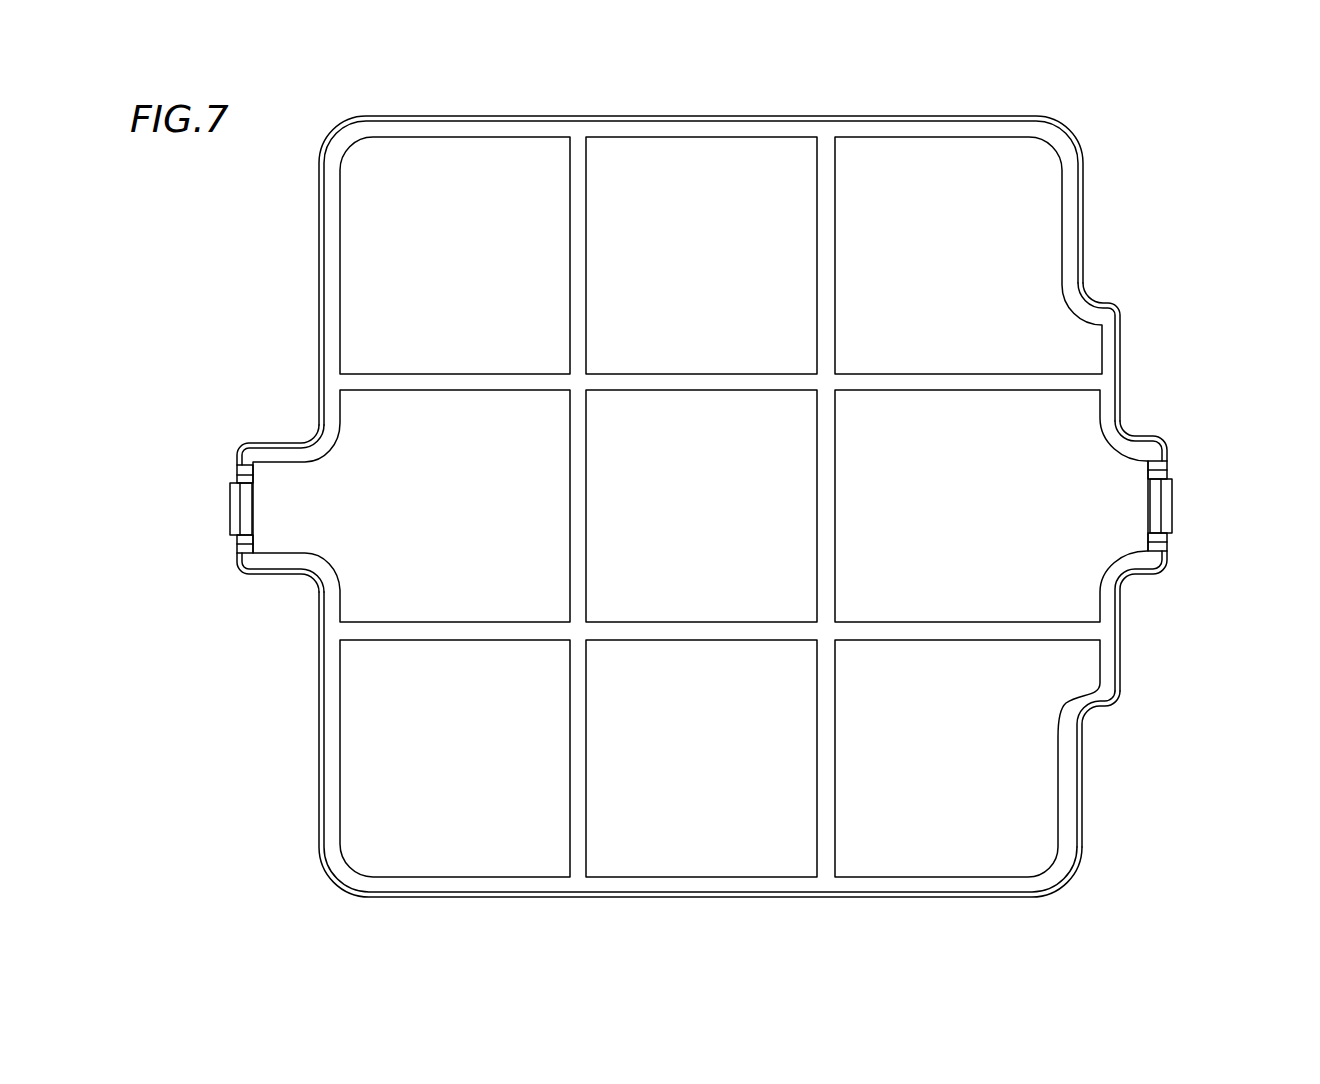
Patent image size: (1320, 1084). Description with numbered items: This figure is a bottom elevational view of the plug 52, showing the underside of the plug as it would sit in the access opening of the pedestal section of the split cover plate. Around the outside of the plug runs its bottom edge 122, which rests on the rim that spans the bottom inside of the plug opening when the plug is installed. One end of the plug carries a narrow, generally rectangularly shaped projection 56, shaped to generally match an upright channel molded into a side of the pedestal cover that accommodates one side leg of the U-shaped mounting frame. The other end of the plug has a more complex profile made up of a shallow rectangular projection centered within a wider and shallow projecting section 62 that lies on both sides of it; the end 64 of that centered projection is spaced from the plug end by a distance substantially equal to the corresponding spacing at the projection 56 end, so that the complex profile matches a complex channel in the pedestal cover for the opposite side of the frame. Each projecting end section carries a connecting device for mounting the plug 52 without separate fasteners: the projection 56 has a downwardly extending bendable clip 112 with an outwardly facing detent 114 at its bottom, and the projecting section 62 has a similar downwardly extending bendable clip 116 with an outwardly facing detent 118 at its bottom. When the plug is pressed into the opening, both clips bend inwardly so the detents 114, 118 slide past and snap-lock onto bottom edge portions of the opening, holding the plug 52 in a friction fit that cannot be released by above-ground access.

The plug 52 is at (730, 165).
The bottom edge 122 is at (948, 128).
The end of the projection 64 is at (1110, 346).
The projecting section 62 is at (1172, 556).
The projection 56 is at (267, 456).
The bendable clip 112 is at (254, 499).
The detent 114 is at (238, 515).
The bendable clip 116 is at (1148, 498).
The detent 118 is at (1170, 507).